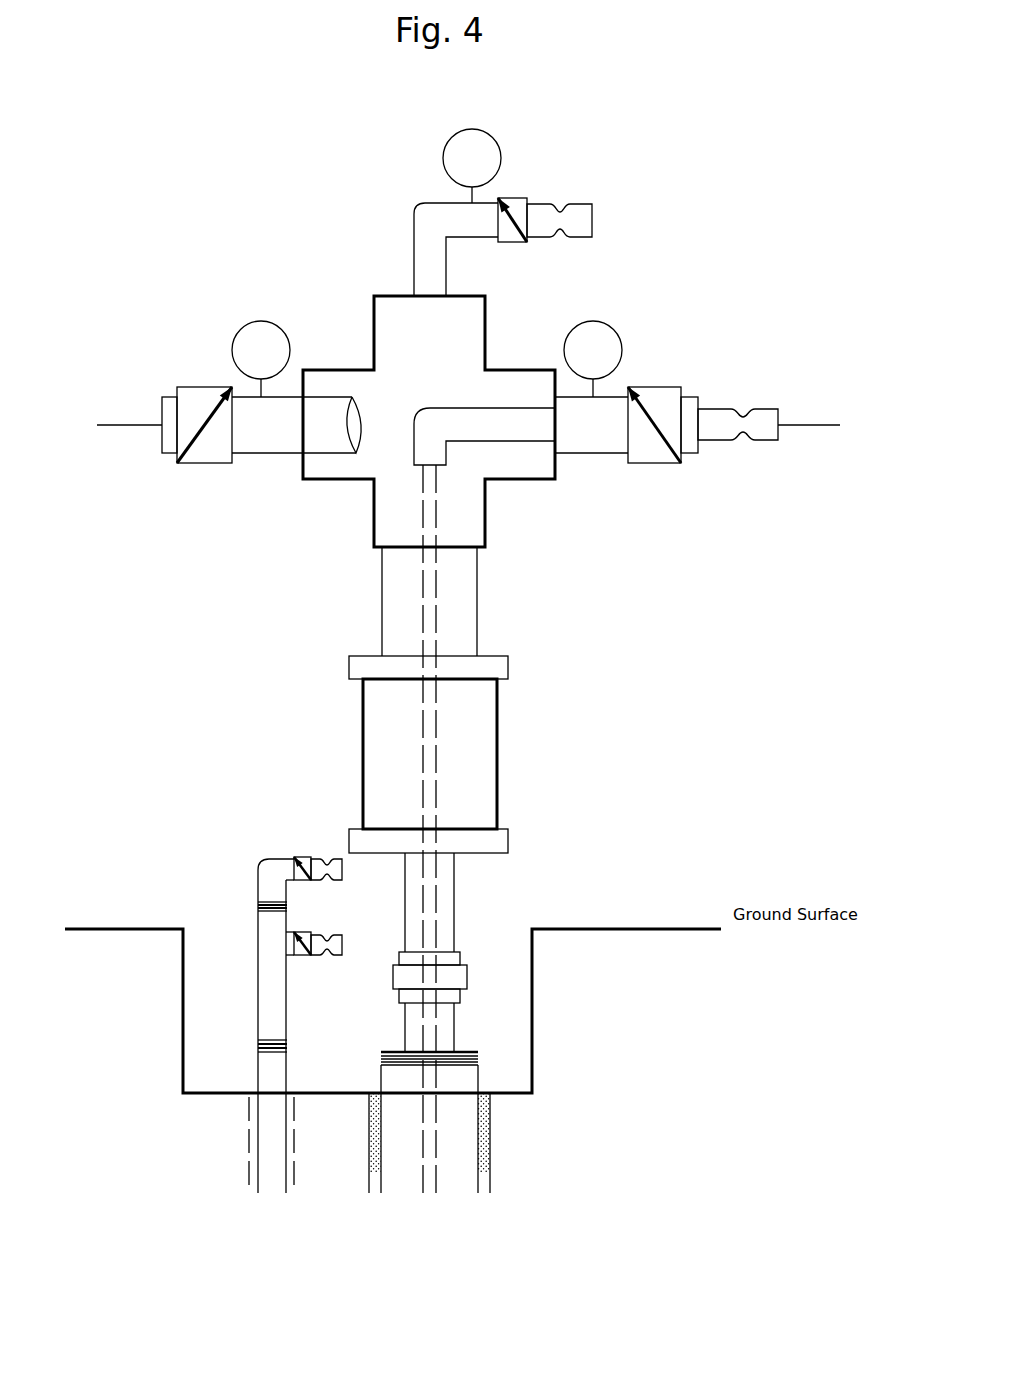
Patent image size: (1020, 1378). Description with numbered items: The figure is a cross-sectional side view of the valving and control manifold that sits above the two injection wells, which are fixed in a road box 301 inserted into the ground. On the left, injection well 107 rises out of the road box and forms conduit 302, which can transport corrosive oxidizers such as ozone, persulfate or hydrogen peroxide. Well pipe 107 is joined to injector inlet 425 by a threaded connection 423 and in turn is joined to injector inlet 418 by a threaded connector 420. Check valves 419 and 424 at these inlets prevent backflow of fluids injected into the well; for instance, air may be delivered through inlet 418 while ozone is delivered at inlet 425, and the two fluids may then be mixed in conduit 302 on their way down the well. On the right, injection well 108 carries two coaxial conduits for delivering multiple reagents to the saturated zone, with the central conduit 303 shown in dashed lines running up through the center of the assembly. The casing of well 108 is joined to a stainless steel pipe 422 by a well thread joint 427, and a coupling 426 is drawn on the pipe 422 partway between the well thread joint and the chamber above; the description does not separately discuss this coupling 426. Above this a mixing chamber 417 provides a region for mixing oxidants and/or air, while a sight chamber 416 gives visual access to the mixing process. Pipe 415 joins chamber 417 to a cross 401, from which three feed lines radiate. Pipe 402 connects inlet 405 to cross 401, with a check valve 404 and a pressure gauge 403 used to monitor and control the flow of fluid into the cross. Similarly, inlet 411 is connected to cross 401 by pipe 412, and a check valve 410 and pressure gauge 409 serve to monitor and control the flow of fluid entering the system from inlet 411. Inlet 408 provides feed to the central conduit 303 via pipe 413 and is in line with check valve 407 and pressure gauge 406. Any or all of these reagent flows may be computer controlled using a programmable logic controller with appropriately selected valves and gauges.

The cross 401 is at (395, 315).
The pipe 402 is at (428, 225).
The pressure gauge 403 is at (500, 153).
The check valve 404 is at (527, 198).
The inlet 405 is at (595, 221).
The pressure gauge 406 is at (614, 330).
The check valve 407 is at (681, 387).
The inlet 408 is at (786, 425).
The pressure gauge 409 is at (244, 328).
The check valve 410 is at (177, 387).
The inlet 411 is at (113, 425).
The pipe 412 is at (273, 432).
The pipe 413 is at (586, 432).
The central conduit 303 is at (432, 622).
The pipe 415 is at (478, 640).
The sight chamber 416 is at (498, 746).
The mixing chamber 417 is at (383, 770).
The injector inlet 418 is at (336, 860).
The check valve 419 is at (297, 858).
The threaded connector 420 is at (257, 905).
The stainless steel pipe 422 is at (455, 900).
The threaded connection 423 is at (255, 1050).
The check valve 424 is at (298, 957).
The injector inlet 425 is at (340, 956).
The pipe coupling 426 is at (468, 977).
The well thread joint 427 is at (478, 1054).
The road box 301 is at (122, 928).
The conduit 302 is at (270, 1143).
The injection well 107 is at (258, 1165).
The injection well 108 is at (455, 1140).